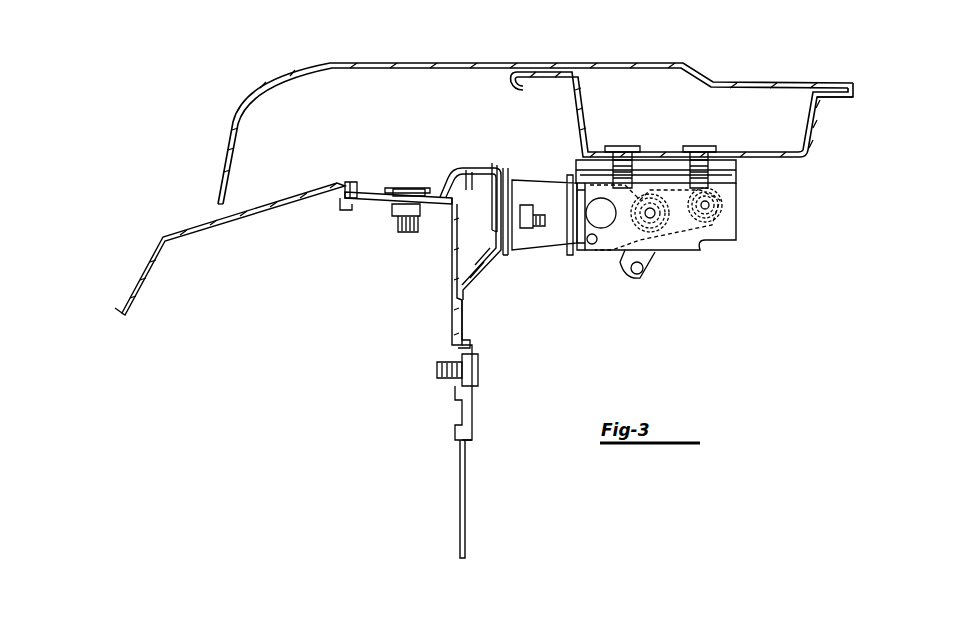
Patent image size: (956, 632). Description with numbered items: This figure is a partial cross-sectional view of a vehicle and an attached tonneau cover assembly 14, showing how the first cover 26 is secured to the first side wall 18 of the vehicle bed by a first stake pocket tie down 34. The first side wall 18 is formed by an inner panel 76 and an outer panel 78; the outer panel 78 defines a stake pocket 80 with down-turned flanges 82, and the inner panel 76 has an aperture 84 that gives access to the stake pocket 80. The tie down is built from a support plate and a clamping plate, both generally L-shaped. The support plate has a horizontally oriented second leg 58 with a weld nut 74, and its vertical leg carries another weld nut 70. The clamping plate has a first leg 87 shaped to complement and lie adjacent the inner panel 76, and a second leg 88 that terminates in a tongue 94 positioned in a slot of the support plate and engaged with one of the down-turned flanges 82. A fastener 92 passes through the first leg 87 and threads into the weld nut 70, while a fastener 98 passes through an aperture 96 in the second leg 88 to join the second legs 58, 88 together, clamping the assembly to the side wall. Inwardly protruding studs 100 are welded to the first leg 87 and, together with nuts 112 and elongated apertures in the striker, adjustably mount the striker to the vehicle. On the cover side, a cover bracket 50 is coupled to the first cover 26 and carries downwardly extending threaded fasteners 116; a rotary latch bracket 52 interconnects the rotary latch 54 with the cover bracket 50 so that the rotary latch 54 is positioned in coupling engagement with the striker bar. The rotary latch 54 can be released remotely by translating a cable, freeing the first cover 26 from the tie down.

The tonneau cover assembly 14 is at (514, 78).
The first side wall 18 is at (133, 238).
The first cover 26 is at (395, 62).
The first stake pocket tie down 34 is at (334, 338).
The cover bracket 50 is at (815, 132).
The rotary latch bracket 52 is at (735, 165).
The rotary latch 54 is at (737, 243).
The second leg 58 is at (368, 202).
The weld nut 70 is at (456, 388).
The weld nut 74 is at (420, 214).
The inner panel 76 is at (458, 505).
The outer panel 78 is at (190, 232).
The stake pocket 80 is at (458, 200).
The down-turned flanges 82 is at (343, 190).
The aperture 84 is at (468, 346).
The first leg 87 is at (500, 268).
The second leg 88 is at (447, 187).
The fastener 92 is at (478, 360).
The tongue 94 is at (343, 206).
The aperture 96 is at (390, 199).
The fastener 98 is at (405, 190).
The studs 100 is at (541, 208).
The nuts 112 is at (528, 202).
The threaded fasteners 116 is at (618, 150).